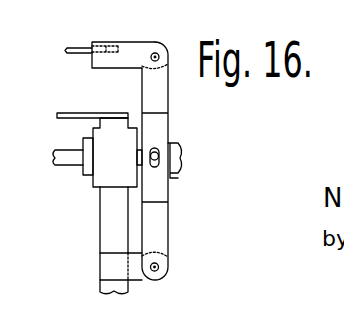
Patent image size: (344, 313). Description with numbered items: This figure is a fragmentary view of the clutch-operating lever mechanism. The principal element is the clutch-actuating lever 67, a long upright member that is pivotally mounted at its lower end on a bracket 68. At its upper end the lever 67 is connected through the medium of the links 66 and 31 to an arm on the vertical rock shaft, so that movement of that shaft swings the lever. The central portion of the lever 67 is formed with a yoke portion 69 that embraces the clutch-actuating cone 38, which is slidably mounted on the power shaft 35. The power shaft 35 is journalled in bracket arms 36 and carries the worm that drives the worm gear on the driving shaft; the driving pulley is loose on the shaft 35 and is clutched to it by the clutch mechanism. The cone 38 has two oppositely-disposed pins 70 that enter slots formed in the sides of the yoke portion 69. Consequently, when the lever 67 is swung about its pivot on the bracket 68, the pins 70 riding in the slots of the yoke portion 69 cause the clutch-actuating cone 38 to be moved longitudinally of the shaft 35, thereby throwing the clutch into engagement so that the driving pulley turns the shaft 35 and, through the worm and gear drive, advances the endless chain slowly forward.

The link 31 is at (125, 45).
The link 66 is at (76, 53).
The power shaft 35 is at (67, 158).
The bracket arms 36 is at (107, 215).
The pins 70 is at (157, 153).
The clutch-actuating cone 38 is at (177, 142).
The yoke portion 69 is at (160, 186).
The clutch-actuating lever 67 is at (160, 228).
The bracket 68 is at (163, 263).